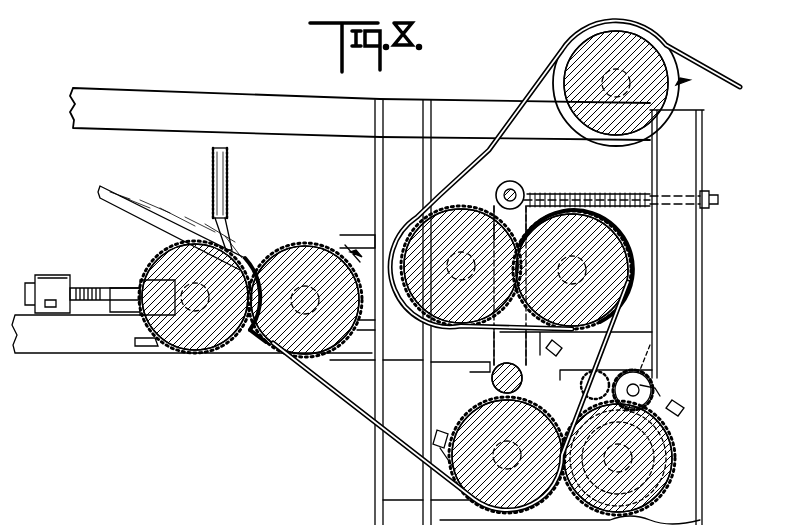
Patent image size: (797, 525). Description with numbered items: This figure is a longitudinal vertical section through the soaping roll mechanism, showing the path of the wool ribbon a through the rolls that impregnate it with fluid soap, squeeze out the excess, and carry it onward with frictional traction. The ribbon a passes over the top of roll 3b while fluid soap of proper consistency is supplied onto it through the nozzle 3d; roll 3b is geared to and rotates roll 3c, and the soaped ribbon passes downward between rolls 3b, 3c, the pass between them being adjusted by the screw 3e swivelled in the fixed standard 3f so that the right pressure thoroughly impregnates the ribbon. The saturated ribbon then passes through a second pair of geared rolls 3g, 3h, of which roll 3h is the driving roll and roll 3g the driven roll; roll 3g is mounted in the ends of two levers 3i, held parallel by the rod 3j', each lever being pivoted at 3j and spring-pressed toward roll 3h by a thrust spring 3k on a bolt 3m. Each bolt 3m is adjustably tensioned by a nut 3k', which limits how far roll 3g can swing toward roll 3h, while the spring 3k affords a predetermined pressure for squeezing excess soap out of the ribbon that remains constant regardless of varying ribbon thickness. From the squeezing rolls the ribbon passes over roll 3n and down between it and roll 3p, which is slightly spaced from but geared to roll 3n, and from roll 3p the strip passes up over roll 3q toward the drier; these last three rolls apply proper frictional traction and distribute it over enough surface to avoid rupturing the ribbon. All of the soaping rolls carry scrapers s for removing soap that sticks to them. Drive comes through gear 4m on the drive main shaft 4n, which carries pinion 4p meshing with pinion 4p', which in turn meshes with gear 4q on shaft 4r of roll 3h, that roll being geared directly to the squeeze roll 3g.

The ribbon a is at (148, 206).
The roll 3b is at (172, 262).
The roll 3c is at (308, 252).
The nozzle 3d is at (227, 186).
The screw 3e is at (90, 288).
The fixed standard 3f is at (50, 275).
The driven roll 3g is at (478, 424).
The driving roll 3h is at (660, 432).
The lever 3i is at (490, 381).
The pivot 3j is at (507, 364).
The rod 3j' is at (510, 182).
The thrust spring 3k is at (588, 182).
The nut 3k' is at (722, 185).
The bolt 3m is at (613, 194).
The roll 3n is at (600, 244).
The roll 3p is at (432, 236).
The roll 3q is at (578, 48).
The gear 4m is at (655, 345).
The drive main shaft 4n is at (650, 380).
The pinion 4p is at (660, 386).
The pinion 4p' is at (609, 367).
The gear 4q is at (665, 488).
The shaft 4r is at (655, 458).
The scraper s is at (698, 88).